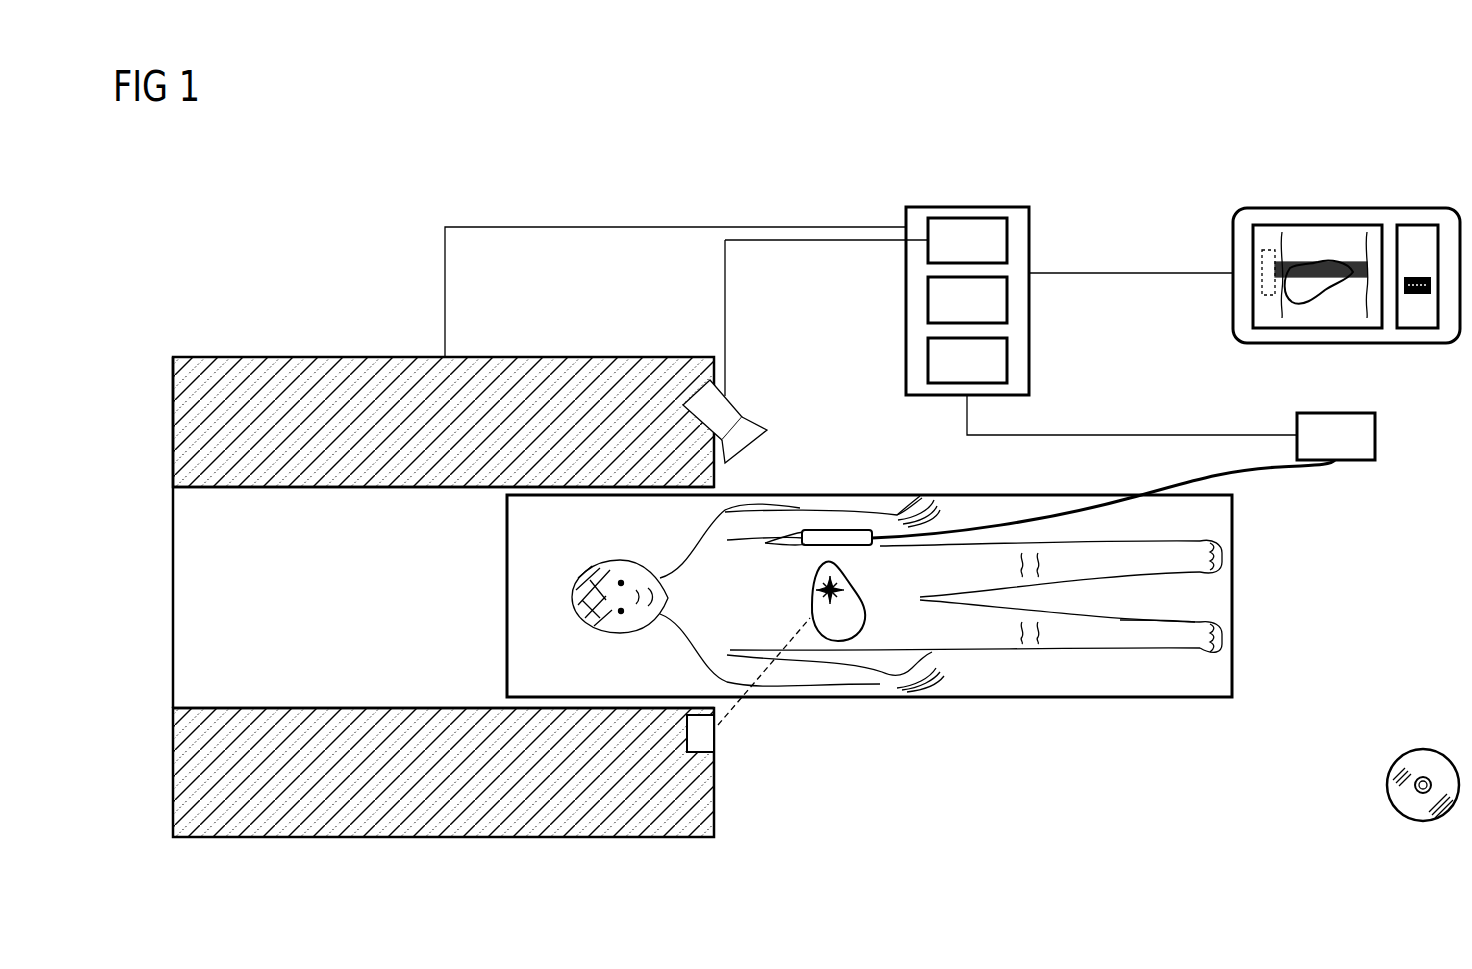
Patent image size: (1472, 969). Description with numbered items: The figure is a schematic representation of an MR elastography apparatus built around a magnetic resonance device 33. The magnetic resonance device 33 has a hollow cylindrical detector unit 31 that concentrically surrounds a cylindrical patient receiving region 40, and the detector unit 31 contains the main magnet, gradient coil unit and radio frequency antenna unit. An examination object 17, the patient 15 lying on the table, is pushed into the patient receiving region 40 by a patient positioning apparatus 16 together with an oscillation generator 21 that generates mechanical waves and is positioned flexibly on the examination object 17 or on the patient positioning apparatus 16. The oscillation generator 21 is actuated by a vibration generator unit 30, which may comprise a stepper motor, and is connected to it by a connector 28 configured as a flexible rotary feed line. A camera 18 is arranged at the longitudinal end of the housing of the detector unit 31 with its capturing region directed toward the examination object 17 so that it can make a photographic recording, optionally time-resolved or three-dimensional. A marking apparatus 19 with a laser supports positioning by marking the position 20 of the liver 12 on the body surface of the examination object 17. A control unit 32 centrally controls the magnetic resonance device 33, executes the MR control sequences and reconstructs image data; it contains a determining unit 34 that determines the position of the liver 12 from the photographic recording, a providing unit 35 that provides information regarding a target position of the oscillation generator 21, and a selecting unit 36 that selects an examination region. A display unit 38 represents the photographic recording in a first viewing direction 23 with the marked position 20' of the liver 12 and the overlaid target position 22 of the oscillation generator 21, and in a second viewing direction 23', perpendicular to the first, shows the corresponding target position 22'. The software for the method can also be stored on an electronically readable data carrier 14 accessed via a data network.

The liver 12 is at (858, 622).
The electronically readable data carrier 14 is at (1421, 749).
The patient 15 is at (1052, 680).
The patient positioning apparatus 16 is at (1235, 668).
The examination object 17 is at (1138, 635).
The camera 18 is at (735, 402).
The marking apparatus 19 is at (706, 740).
The position of the liver 20 is at (838, 668).
The position of the liver on the photographic recording 20' is at (1321, 333).
The oscillation generator 21 is at (842, 530).
The target position of the oscillation generator 22 is at (1257, 328).
The target position of the oscillation generator in second viewing direction 22' is at (1429, 342).
The first viewing direction 23 is at (1317, 222).
The second viewing direction 23' is at (1421, 222).
The connector 28 is at (1290, 477).
The vibration generator unit 30 is at (1378, 437).
The detector unit 31 is at (173, 441).
The control unit 32 is at (963, 207).
The magnetic resonance device 33 is at (286, 332).
The determining unit 34 is at (1008, 241).
The providing unit 35 is at (1008, 306).
The selecting unit 36 is at (1008, 361).
The display unit 38 is at (1340, 208).
The patient receiving region 40 is at (200, 614).